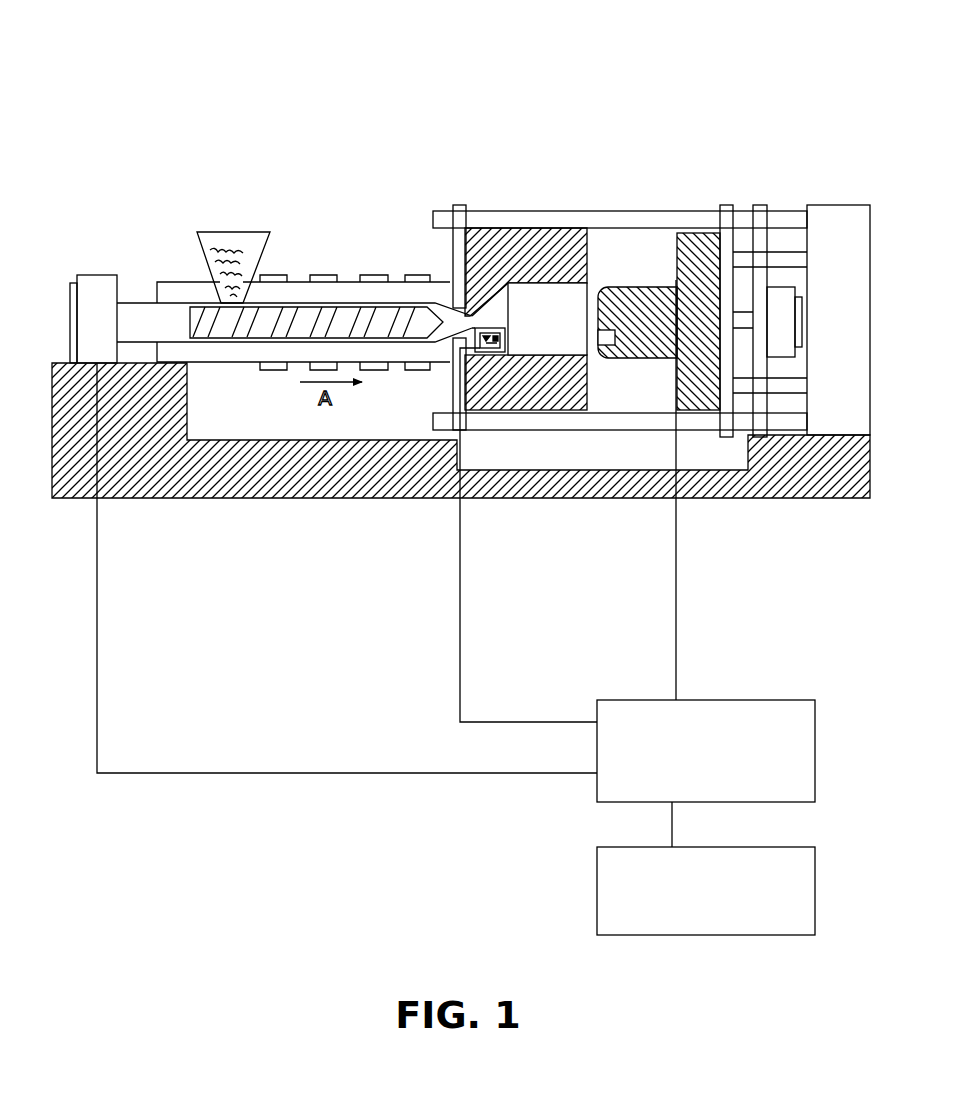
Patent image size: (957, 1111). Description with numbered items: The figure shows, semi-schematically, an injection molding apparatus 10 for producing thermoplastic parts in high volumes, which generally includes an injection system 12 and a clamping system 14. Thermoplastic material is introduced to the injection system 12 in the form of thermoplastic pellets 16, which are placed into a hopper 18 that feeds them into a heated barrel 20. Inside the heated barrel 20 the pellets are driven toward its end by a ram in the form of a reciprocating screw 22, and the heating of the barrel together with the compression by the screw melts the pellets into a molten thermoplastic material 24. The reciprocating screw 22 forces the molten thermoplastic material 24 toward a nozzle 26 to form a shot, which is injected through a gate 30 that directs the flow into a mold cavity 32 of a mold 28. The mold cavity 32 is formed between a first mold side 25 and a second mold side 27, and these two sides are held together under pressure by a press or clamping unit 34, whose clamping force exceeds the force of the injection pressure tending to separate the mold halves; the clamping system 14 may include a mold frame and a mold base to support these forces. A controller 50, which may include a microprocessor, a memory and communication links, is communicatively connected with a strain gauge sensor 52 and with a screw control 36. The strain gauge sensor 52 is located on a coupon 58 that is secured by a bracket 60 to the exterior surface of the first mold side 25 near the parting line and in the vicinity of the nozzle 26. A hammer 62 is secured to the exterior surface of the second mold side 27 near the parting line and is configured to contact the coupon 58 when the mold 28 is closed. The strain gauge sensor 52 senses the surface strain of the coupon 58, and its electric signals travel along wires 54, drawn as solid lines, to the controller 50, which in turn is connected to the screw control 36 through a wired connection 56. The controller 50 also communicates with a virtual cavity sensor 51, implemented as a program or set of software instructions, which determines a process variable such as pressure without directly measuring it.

The injection molding apparatus 10 is at (428, 115).
The injection system 12 is at (282, 410).
The clamping system 14 is at (610, 508).
The thermoplastic pellets 16 is at (213, 257).
The hopper 18 is at (238, 232).
The heated barrel 20 is at (348, 280).
The reciprocating screw 22 is at (245, 320).
The molten thermoplastic material 24 is at (397, 303).
The first mold side 25 is at (527, 400).
The nozzle 26 is at (475, 228).
The second mold side 27 is at (658, 345).
The mold 28 is at (590, 228).
The gate 30 is at (493, 300).
The mold cavity 32 is at (557, 300).
The clamping unit 34 is at (808, 205).
The screw control 36 is at (93, 275).
The controller 50 is at (700, 700).
The virtual cavity sensor 51 is at (597, 870).
The strain gauge sensor 52 is at (480, 352).
The wires 54 is at (675, 653).
The wired connection 56 is at (330, 773).
The coupon 58 is at (500, 345).
The bracket 60 is at (490, 345).
The hammer 62 is at (613, 333).